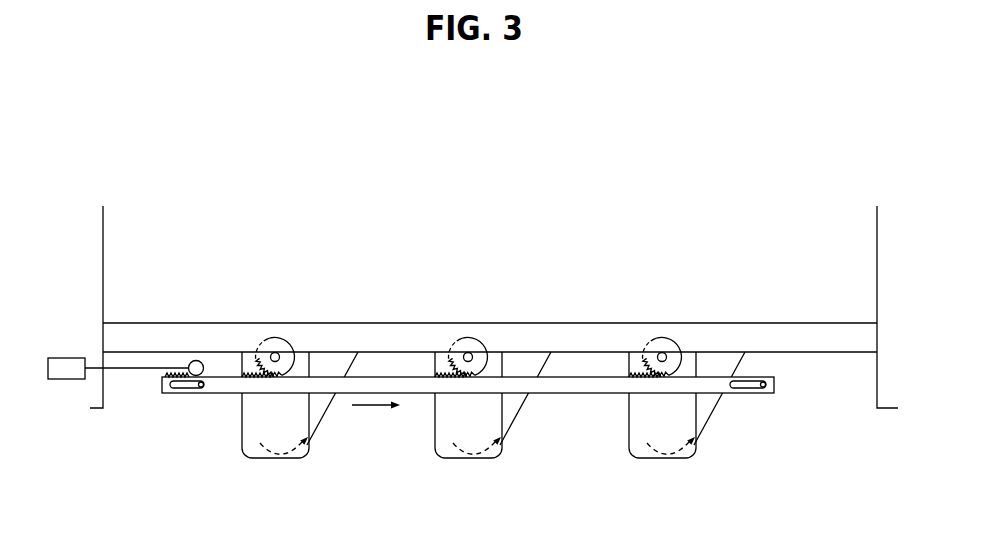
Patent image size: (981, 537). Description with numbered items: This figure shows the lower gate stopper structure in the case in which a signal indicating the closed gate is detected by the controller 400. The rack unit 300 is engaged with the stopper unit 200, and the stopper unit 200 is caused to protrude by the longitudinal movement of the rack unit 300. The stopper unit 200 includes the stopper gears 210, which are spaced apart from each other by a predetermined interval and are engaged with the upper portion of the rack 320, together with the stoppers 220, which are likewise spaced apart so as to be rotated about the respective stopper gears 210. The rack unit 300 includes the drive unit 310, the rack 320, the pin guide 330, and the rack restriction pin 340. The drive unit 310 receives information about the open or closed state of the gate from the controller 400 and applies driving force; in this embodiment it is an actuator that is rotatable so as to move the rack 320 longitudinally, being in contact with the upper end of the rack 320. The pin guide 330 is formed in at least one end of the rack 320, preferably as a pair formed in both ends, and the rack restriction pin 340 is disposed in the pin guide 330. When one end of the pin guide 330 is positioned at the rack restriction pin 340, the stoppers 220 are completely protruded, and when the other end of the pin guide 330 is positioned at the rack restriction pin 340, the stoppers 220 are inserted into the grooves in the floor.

The stopper unit 200 is at (592, 145).
The stopper gears 210 is at (662, 352).
The stoppers 220 is at (322, 352).
The rack unit 300 is at (418, 394).
The drive unit 310 is at (196, 360).
The rack 320 is at (236, 391).
The pin guide 330 is at (184, 393).
The rack restriction pin 340 is at (207, 393).
The controller 400 is at (68, 358).